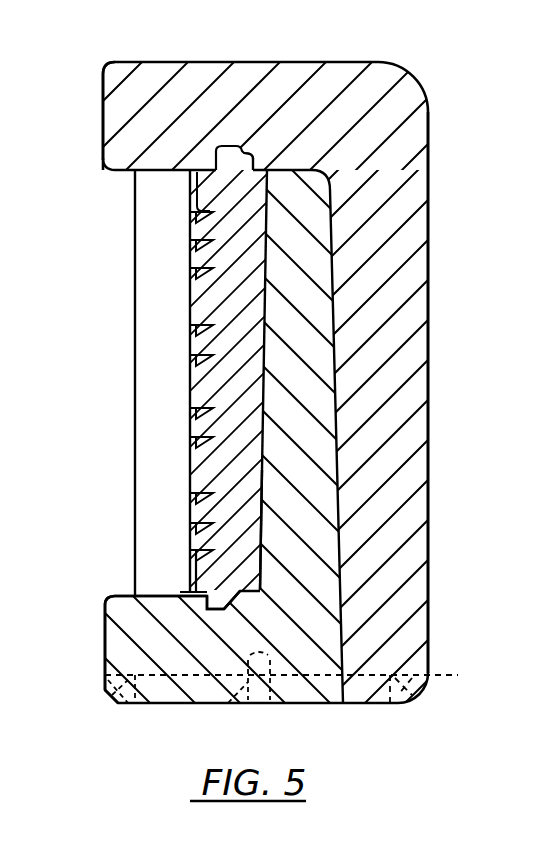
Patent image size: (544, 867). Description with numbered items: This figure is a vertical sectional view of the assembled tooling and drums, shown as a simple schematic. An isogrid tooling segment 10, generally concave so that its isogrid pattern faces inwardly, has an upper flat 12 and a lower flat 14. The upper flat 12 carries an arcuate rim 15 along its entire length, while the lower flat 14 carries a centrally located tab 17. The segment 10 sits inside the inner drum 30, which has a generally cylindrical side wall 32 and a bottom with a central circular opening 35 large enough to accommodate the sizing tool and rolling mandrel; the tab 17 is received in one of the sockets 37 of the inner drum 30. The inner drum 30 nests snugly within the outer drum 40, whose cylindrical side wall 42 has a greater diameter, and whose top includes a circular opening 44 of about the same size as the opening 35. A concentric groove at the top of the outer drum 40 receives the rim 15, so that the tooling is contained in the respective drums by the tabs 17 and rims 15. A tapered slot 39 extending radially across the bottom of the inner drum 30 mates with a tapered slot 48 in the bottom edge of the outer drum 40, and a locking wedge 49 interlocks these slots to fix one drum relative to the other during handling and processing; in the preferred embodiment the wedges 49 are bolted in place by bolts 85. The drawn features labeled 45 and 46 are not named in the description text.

The isogrid tooling segment 10 is at (197, 390).
The upper flat 12 is at (190, 183).
The lower flat 14 is at (196, 565).
The arcuate rim 15 is at (233, 147).
The tab 17 is at (214, 600).
The inner drum 30 is at (118, 617).
The cylindrical side wall 32 is at (261, 492).
The central circular opening 35 is at (112, 663).
The socket 37 is at (224, 608).
The tapered slot 39 is at (107, 689).
The outer drum 40 is at (428, 393).
The cylindrical side wall 42 is at (329, 260).
The circular opening 44 is at (103, 117).
The seal lip 45 is at (245, 165).
The housing outer wall 46 is at (430, 454).
The slot 48 is at (296, 689).
The wedge 49 is at (110, 702).
The bolt 85 is at (235, 702).